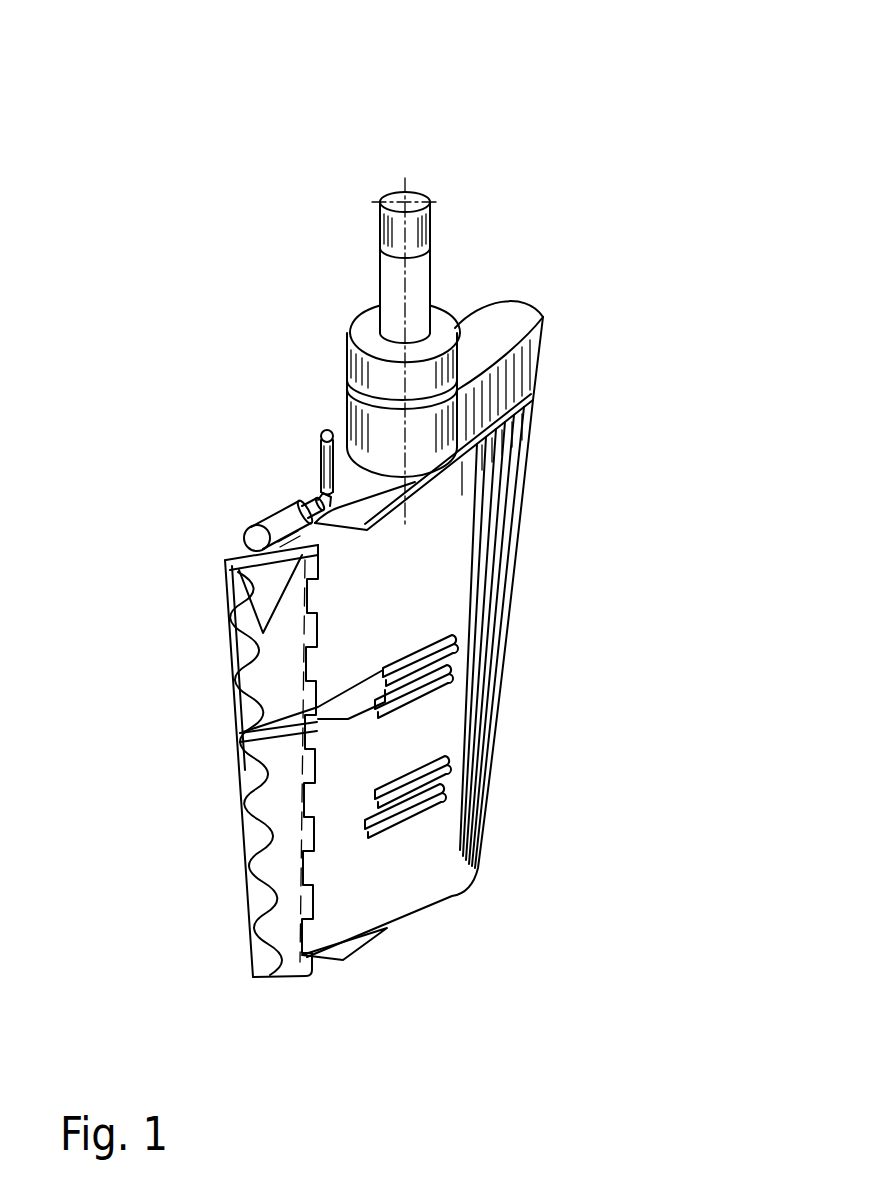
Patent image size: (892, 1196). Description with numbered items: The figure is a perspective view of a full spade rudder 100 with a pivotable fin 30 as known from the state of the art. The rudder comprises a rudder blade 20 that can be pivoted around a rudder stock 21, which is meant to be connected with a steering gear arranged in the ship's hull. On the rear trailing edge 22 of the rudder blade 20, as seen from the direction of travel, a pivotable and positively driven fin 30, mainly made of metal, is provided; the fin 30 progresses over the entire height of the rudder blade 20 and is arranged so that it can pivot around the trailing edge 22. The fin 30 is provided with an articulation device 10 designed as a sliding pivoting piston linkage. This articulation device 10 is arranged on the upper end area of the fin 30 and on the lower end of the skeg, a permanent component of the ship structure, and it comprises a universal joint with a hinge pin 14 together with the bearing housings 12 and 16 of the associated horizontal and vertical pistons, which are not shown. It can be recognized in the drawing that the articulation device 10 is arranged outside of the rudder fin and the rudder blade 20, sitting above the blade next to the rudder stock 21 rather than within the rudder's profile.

The full spade rudder 100 is at (498, 165).
The articulation device 10 is at (243, 485).
The bearing housing 12 is at (277, 520).
The hinge pin 14 is at (316, 496).
The bearing housing 16 is at (322, 442).
The rudder blade 20 is at (412, 895).
The rudder stock 21 is at (417, 280).
The trailing edge 22 is at (304, 956).
The fin 30 is at (275, 908).